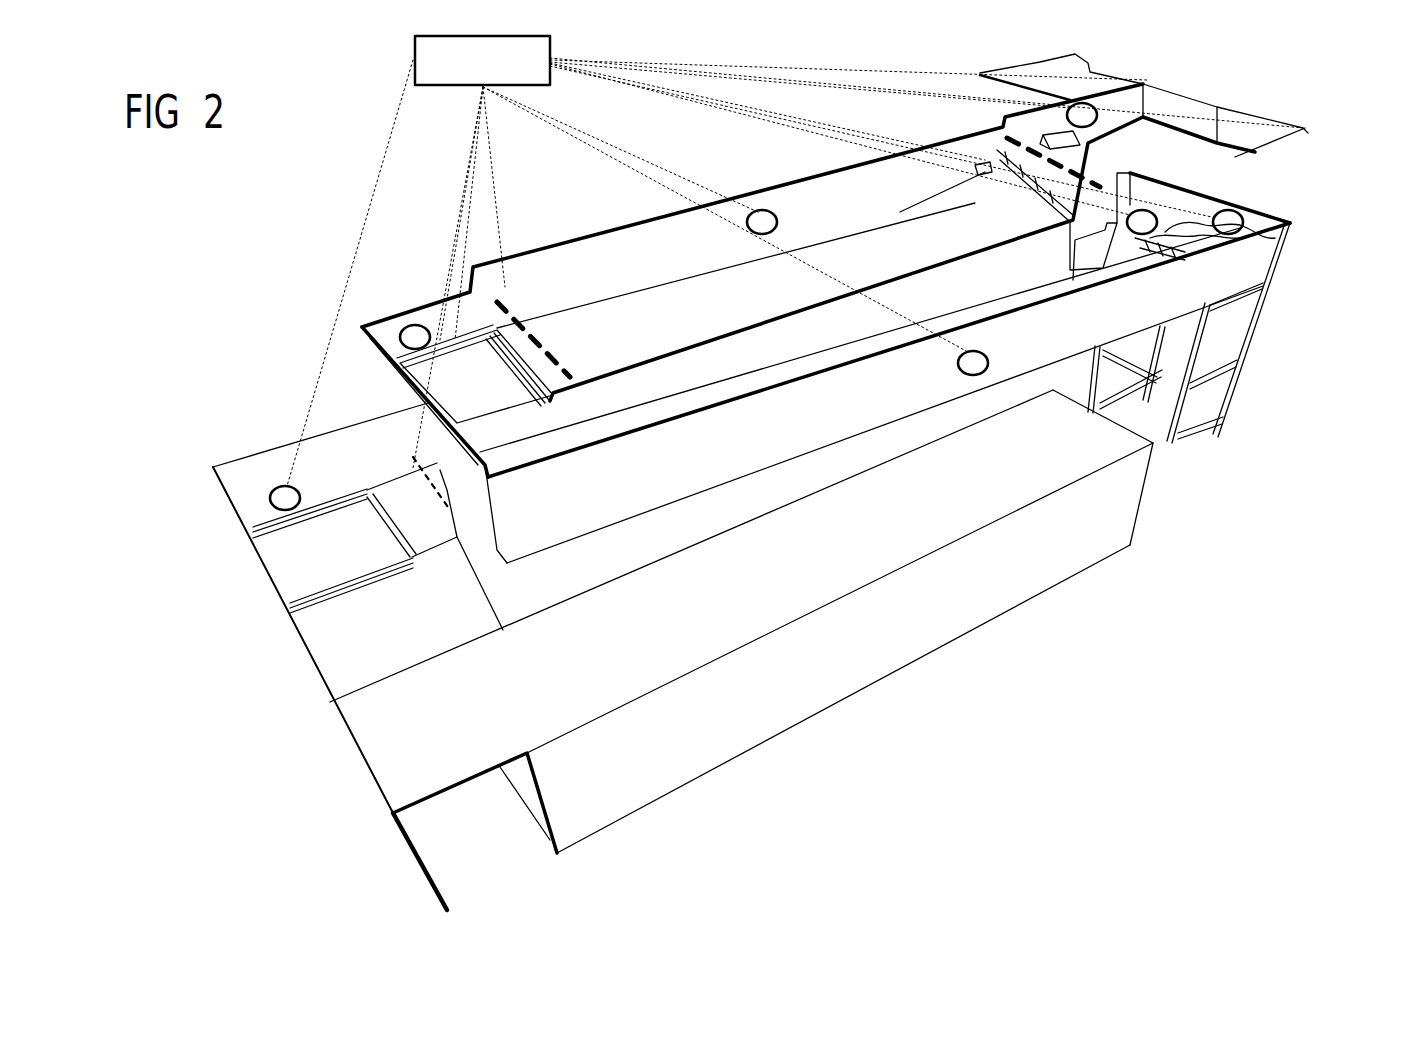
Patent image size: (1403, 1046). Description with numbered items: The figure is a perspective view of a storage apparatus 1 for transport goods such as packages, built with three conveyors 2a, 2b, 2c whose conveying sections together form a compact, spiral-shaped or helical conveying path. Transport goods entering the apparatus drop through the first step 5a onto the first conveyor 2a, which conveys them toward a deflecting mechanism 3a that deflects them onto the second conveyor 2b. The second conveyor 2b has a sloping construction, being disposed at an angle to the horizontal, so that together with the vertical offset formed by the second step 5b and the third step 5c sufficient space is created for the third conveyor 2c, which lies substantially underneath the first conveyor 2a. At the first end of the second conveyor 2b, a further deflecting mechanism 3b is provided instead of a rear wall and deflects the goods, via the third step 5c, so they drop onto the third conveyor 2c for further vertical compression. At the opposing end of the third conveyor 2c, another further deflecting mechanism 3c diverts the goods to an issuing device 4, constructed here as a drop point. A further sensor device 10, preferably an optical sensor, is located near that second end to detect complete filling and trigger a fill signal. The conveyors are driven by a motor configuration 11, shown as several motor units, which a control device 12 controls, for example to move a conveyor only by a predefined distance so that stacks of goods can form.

The storage apparatus 1 is at (350, 280).
The first conveyor 2a is at (678, 300).
The second conveyor 2b is at (817, 365).
The third conveyor 2c is at (367, 492).
The deflecting mechanism 3a is at (452, 372).
The further deflecting mechanism 3b is at (1183, 252).
The further deflecting mechanism 3c is at (293, 577).
The issuing device 4 is at (357, 655).
The first step 5a is at (990, 160).
The second step 5b is at (510, 432).
The third step 5c is at (1243, 207).
The further sensor device 10 is at (413, 460).
The motor configuration 11 is at (407, 322).
The control device 12 is at (550, 40).